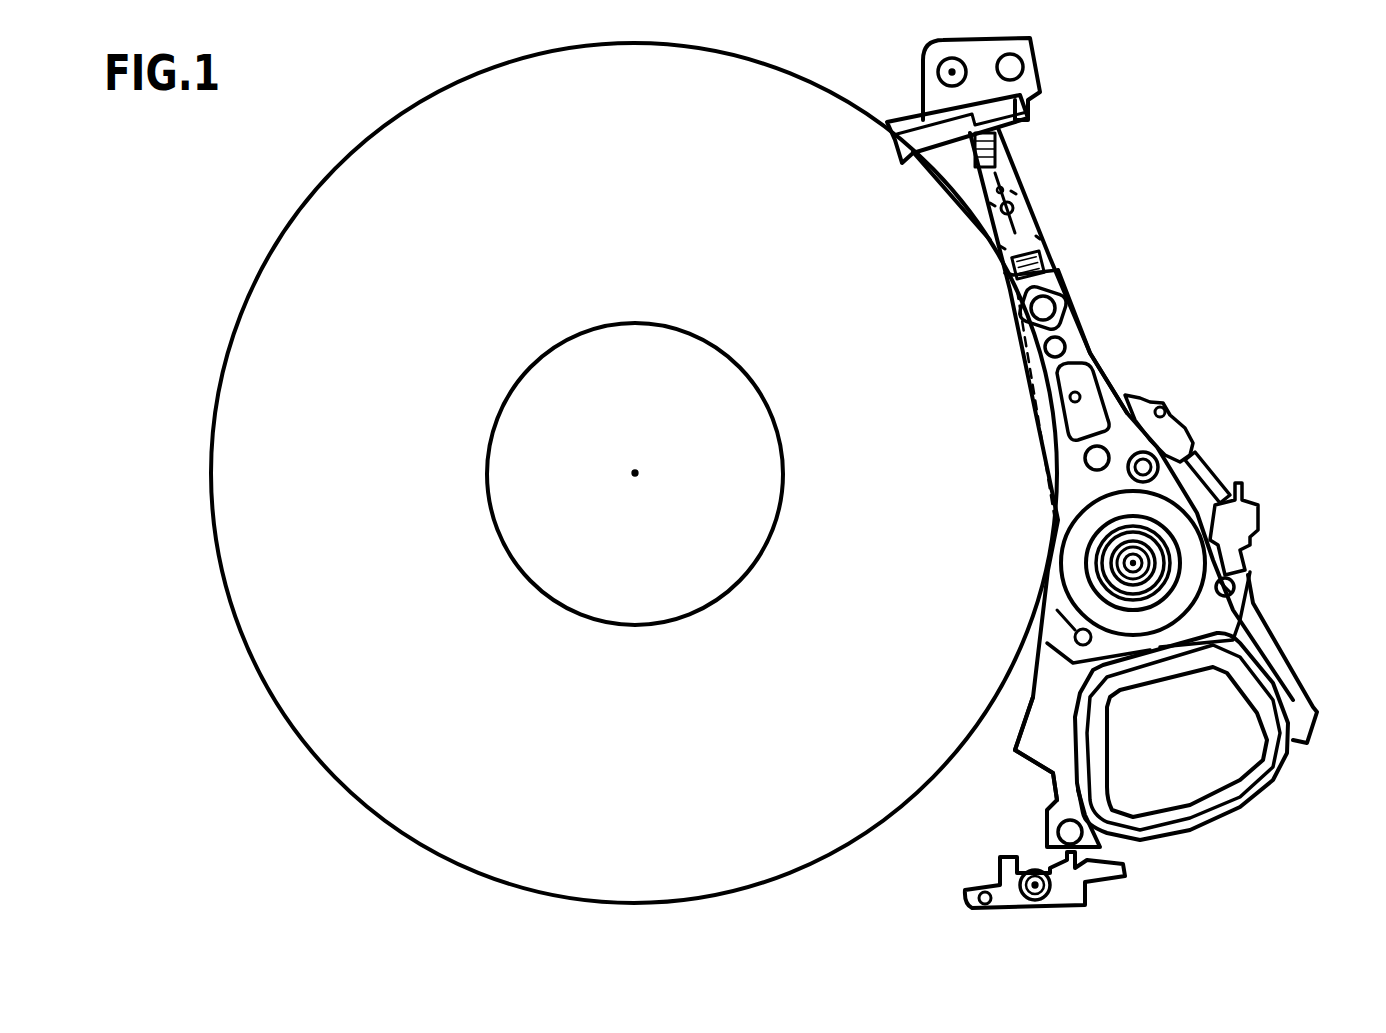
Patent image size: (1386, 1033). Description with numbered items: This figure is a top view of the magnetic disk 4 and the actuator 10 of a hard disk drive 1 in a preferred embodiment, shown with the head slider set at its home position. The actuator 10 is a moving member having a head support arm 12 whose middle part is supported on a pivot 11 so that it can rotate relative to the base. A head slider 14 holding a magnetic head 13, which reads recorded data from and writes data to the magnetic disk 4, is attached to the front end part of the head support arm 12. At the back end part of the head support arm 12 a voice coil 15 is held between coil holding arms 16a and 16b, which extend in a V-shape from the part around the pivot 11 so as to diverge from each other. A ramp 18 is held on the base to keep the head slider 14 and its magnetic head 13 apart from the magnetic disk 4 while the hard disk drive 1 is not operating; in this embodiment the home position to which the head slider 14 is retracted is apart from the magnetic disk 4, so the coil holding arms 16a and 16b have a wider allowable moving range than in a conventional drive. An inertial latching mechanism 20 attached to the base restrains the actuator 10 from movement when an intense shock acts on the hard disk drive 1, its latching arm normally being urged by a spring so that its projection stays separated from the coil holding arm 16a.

The hard disk drive 1 is at (1308, 140).
The magnetic disk 4 is at (322, 262).
The actuator 10 is at (1119, 341).
The pivot 11 is at (1177, 500).
The head support arm 12 is at (1093, 372).
The magnetic head 13 is at (1005, 136).
The head slider 14 is at (1012, 207).
The voice coil 15 is at (1260, 790).
The coil holding arm 16a is at (1040, 735).
The coil holding arm 16b is at (1278, 660).
The ramp 18 is at (1032, 44).
The inertial latching mechanism 20 is at (948, 893).